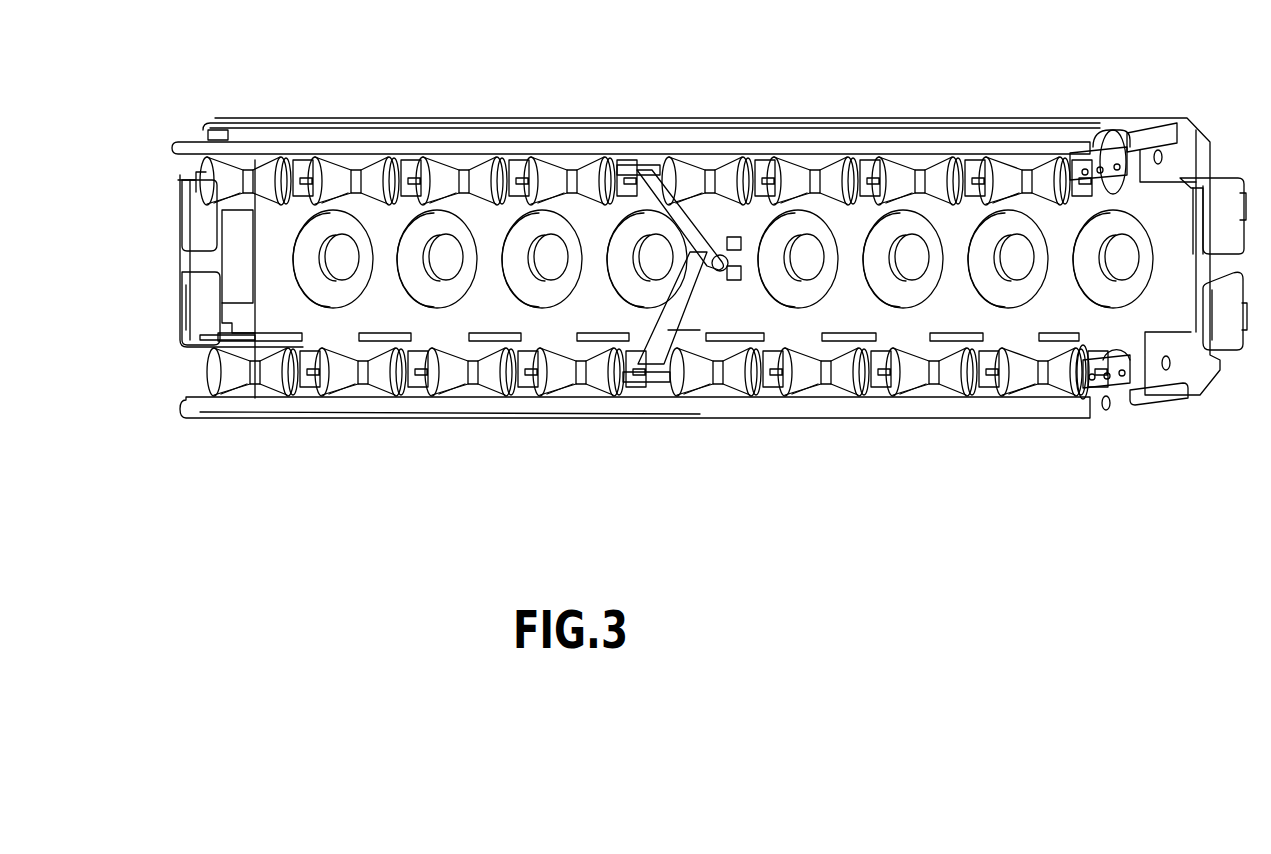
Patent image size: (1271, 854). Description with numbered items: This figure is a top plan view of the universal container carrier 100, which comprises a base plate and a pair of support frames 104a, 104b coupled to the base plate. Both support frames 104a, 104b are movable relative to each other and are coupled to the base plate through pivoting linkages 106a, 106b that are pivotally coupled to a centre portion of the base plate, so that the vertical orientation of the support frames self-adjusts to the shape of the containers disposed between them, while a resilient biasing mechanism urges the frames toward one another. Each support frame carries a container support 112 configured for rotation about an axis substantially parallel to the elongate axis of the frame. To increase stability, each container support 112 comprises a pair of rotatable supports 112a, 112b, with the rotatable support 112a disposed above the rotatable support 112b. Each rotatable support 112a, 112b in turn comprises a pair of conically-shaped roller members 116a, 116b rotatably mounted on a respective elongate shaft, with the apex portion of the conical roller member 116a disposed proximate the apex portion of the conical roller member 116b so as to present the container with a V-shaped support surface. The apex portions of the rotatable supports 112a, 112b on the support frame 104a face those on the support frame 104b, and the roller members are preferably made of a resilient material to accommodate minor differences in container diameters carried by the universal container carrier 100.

The universal container carrier 100 is at (885, 548).
The support frame 104a is at (197, 150).
The support frame 104b is at (208, 407).
The pivoting linkage 106a is at (639, 178).
The pivoting linkage 106b is at (657, 340).
The container support 112 is at (1058, 214).
The rotatable support 112a is at (172, 169).
The rotatable support 112b is at (340, 320).
The conically-shaped roller member 116a is at (323, 173).
The conically-shaped roller member 116b is at (370, 172).